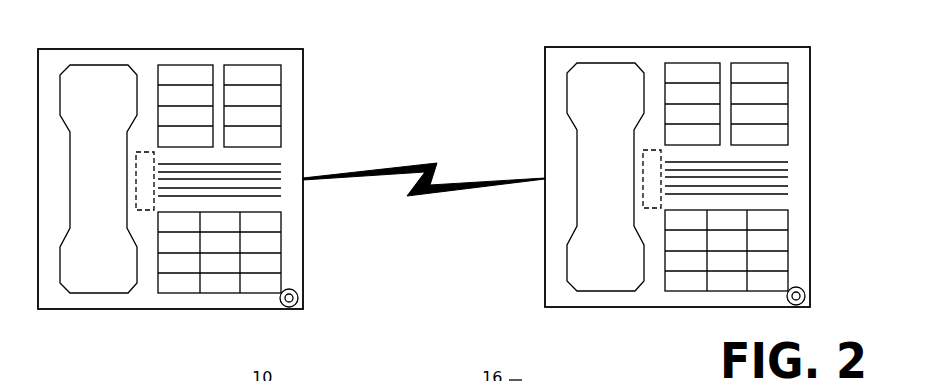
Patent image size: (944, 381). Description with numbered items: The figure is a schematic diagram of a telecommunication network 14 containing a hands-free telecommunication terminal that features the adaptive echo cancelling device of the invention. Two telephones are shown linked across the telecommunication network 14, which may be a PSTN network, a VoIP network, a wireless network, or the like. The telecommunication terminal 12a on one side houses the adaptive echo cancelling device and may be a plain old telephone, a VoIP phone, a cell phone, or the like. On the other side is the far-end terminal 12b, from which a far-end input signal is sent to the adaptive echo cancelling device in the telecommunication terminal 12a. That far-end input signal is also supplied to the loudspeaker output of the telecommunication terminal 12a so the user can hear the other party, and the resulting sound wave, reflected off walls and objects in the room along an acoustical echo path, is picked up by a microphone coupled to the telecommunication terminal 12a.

The telecommunication terminal 12a is at (654, 169).
The far-end terminal 12b is at (218, 171).
The telecommunication network 14 is at (439, 150).